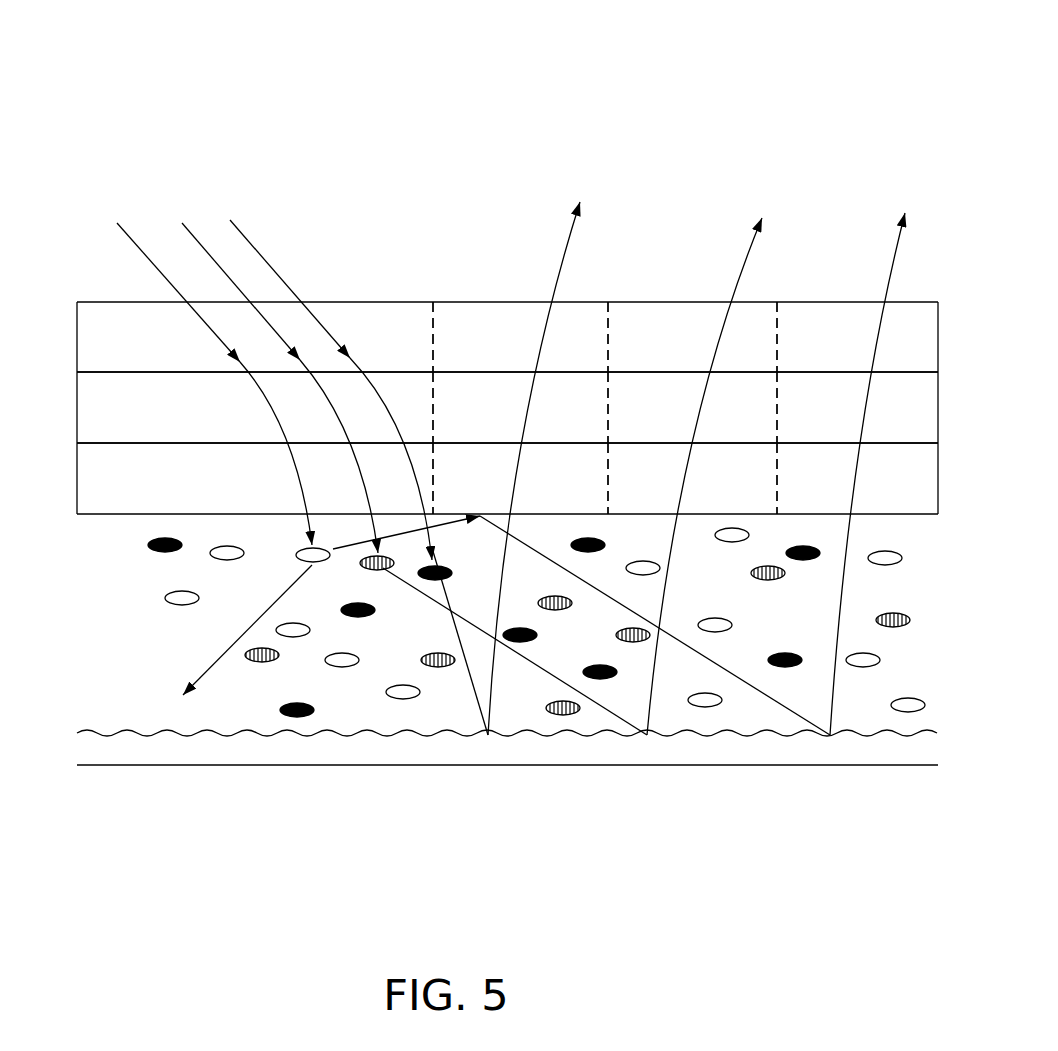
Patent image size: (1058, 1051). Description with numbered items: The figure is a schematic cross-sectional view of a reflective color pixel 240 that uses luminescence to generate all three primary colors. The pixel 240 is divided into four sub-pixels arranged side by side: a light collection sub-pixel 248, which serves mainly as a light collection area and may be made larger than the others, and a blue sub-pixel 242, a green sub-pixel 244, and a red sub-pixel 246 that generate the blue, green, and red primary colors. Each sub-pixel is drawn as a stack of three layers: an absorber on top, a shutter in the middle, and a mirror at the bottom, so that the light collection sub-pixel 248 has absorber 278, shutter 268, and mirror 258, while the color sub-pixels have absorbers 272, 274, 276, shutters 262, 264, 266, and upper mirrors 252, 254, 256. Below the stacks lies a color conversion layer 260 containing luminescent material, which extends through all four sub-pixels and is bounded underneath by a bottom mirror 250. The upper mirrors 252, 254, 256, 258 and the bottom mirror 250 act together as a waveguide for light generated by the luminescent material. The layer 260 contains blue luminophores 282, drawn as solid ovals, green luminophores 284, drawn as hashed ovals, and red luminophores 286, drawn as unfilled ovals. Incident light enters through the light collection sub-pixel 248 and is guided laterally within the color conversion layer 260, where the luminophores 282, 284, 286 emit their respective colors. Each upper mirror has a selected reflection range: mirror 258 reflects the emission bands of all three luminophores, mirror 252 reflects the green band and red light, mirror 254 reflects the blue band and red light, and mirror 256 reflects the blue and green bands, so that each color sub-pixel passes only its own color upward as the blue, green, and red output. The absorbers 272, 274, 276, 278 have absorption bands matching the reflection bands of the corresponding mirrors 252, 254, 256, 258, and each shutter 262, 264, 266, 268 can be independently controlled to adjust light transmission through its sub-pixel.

The reflective color pixel 240 is at (305, 138).
The blue sub-pixel 242 is at (440, 301).
The green sub-pixel 244 is at (633, 301).
The red sub-pixel 246 is at (788, 301).
The light collection sub-pixel 248 is at (330, 301).
The bottom mirror 250 is at (118, 728).
The mirror 252 is at (520, 478).
The mirror 254 is at (692, 478).
The mirror 256 is at (857, 478).
The mirror 258 is at (255, 478).
The color conversion layer 260 is at (148, 685).
The shutter 262 is at (520, 407).
The shutter 264 is at (692, 407).
The shutter 266 is at (857, 407).
The shutter 268 is at (255, 407).
The absorber 272 is at (520, 337).
The absorber 274 is at (692, 337).
The absorber 276 is at (857, 337).
The absorber 278 is at (255, 337).
The blue luminophores 282 is at (297, 717).
The green luminophores 284 is at (560, 715).
The red luminophores 286 is at (722, 698).